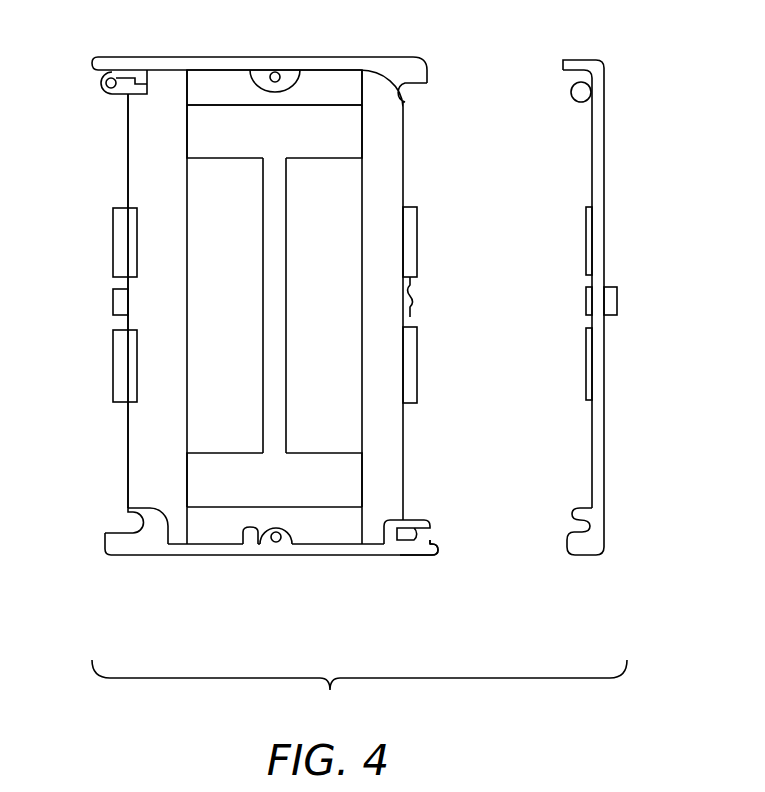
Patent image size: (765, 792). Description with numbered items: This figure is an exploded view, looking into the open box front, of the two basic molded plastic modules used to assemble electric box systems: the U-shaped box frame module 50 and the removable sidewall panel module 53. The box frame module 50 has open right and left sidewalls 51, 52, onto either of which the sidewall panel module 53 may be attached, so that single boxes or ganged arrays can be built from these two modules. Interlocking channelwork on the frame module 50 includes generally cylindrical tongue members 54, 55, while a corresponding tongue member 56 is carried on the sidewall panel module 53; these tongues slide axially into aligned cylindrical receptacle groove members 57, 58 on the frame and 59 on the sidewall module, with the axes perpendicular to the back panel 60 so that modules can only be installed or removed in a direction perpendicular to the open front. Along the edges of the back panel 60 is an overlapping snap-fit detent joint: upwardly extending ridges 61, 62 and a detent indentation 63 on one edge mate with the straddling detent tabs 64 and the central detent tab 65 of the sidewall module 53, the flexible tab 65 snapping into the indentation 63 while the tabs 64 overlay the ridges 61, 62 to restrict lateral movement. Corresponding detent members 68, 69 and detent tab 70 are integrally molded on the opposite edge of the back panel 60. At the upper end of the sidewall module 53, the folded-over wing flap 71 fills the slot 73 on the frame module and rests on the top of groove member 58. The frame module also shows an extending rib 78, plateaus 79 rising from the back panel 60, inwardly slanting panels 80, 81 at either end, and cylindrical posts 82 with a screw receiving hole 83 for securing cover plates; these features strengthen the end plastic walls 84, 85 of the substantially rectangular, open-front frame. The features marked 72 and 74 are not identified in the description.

The box frame module 50 is at (345, 560).
The open sidewall 51 is at (78, 298).
The open sidewall 52 is at (420, 178).
The sidewall panel module 53 is at (607, 164).
The cylindrical tongue member 54 is at (104, 86).
The cylindrical tongue member 55 is at (430, 531).
The tongue member 56 is at (576, 102).
The receptacle groove member 57 is at (115, 520).
The receptacle groove member 58 is at (411, 93).
The receptacle groove member 59 is at (566, 527).
The back panel 60 is at (353, 272).
The upwardly extending ridge 61 is at (412, 232).
The upwardly extending ridge 62 is at (413, 387).
The detent indentation 63 is at (429, 297).
The detent tab 64 is at (585, 365).
The central detent tab 65 is at (585, 303).
The detent member 68 is at (117, 230).
The detent member 69 is at (117, 363).
The detent tab 70 is at (117, 305).
The wing flap 71 is at (576, 60).
The cover bottom flange 72 is at (583, 556).
The slot 73 is at (385, 68).
The bottom plate end 74 is at (427, 558).
The extending rib 78 is at (261, 318).
The plateau 79 is at (195, 94).
The slanted panel 80 is at (198, 137).
The slanted panel 81 is at (197, 480).
The cylindrical post 82 is at (257, 532).
The screw receiving hole 83 is at (278, 542).
The end wall 84 is at (143, 54).
The end wall 85 is at (358, 549).